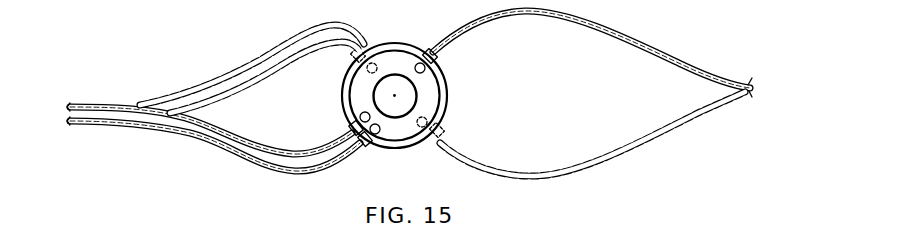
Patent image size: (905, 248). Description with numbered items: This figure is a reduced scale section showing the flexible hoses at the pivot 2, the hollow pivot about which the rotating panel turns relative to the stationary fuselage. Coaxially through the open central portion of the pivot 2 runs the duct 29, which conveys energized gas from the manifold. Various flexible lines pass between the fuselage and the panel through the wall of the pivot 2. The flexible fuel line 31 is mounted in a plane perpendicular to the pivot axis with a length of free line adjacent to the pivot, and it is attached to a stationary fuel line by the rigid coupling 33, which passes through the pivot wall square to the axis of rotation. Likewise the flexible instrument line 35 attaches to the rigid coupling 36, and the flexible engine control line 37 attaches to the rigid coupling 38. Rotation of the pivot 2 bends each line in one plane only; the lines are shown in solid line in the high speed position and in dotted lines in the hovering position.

The pivot 2 is at (443, 88).
The duct 29 is at (402, 75).
The flexible fuel line 31 is at (606, 33).
The rigid coupling 33 is at (440, 59).
The flexible instrument line 35 is at (223, 130).
The rigid coupling 36 is at (347, 121).
The flexible engine control line 37 is at (267, 170).
The rigid coupling 38 is at (365, 146).